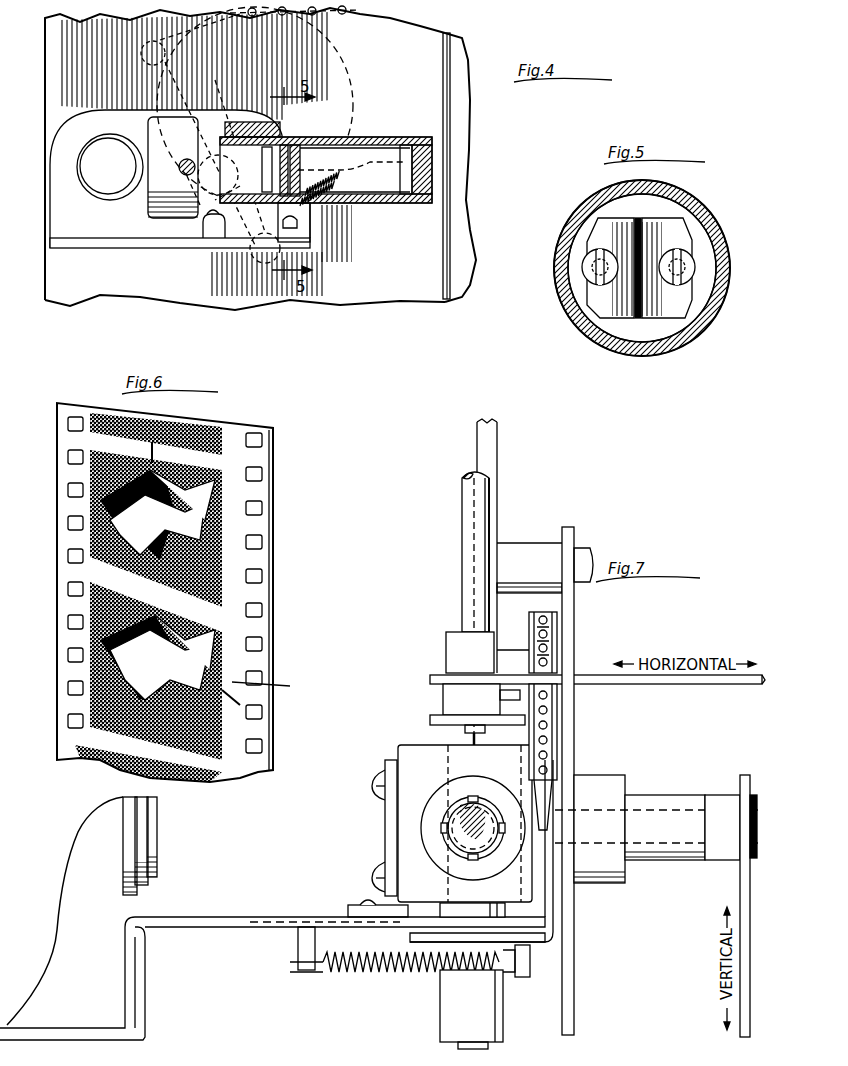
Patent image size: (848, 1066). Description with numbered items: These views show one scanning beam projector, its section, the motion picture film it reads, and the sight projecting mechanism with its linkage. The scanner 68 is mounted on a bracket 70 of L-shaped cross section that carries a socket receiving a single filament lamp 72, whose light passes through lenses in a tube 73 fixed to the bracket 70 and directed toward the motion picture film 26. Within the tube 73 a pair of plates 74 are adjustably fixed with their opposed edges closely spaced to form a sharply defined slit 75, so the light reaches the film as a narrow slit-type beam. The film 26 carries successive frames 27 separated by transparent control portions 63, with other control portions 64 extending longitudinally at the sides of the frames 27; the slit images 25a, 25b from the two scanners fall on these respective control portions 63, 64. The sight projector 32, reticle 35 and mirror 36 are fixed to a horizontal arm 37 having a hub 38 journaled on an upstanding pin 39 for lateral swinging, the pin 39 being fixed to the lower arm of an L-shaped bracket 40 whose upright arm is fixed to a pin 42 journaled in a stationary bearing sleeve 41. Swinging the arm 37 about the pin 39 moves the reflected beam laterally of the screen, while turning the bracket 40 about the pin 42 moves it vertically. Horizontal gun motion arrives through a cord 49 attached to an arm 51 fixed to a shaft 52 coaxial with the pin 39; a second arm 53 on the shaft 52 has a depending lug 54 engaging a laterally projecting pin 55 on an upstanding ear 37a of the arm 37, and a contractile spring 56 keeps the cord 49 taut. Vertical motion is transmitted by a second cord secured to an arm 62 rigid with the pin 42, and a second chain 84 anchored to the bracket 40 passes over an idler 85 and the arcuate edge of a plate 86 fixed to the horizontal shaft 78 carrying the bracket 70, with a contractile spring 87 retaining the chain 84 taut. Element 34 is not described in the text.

In FIG. 4, the motion picture film 26 is at (455, 146).
In FIG. 6, the motion picture film 26 is at (280, 472).
In FIG. 6, the frames 27 is at (222, 443).
In FIG. 6, the slit image 25a is at (160, 441).
In FIG. 6, the slit image 25b is at (238, 708).
In FIG. 7, the sight projector 32 is at (68, 920).
In FIG. 4, the end plate 34 is at (412, 146).
In FIG. 7, the reticle 35 is at (390, 806).
In FIG. 7, the mirror 36 is at (407, 756).
In FIG. 7, the horizontal arm 37 is at (250, 928).
In FIG. 7, the upstanding ear 37a is at (396, 900).
In FIG. 7, the hub 38 is at (487, 912).
In FIG. 7, the upstanding pin 39 is at (462, 1048).
In FIG. 7, the L-shaped bracket 40 is at (556, 930).
In FIG. 7, the bearing sleeve 41 is at (692, 796).
In FIG. 7, the pin 42 is at (652, 808).
In FIG. 7, the cord 49 is at (680, 687).
In FIG. 7, the arm 51 is at (447, 672).
In FIG. 7, the shaft 52 is at (462, 570).
In FIG. 7, the second arm 53 is at (440, 716).
In FIG. 7, the depending lug 54 is at (460, 731).
In FIG. 7, the laterally projecting pin 55 is at (486, 795).
In FIG. 7, the contractile spring 56 is at (408, 974).
In FIG. 7, the arm 62 is at (741, 899).
In FIG. 6, the transparent control portions 63 is at (100, 440).
In FIG. 6, the longitudinal control portions 64 is at (270, 687).
In FIG. 4, the scanner 68 is at (358, 94).
In FIG. 4, the bracket 70 is at (128, 118).
In FIG. 4, the single filament lamp 72 is at (106, 190).
In FIG. 4, the tube 73 is at (355, 147).
In FIG. 5, the tube 73 is at (590, 216).
In FIG. 4, the plates 74 is at (282, 168).
In FIG. 5, the plates 74 is at (628, 230).
In FIG. 4, the slit 75 is at (300, 158).
In FIG. 5, the slit 75 is at (667, 268).
In FIG. 4, the horizontal shaft 78 is at (272, 158).
In FIG. 4, the second chain 84 is at (300, 18).
In FIG. 7, the second chain 84 is at (556, 752).
In FIG. 7, the idler 85 is at (560, 645).
In FIG. 4, the plate 86 is at (290, 45).
In FIG. 4, the contractile spring 87 is at (382, 202).